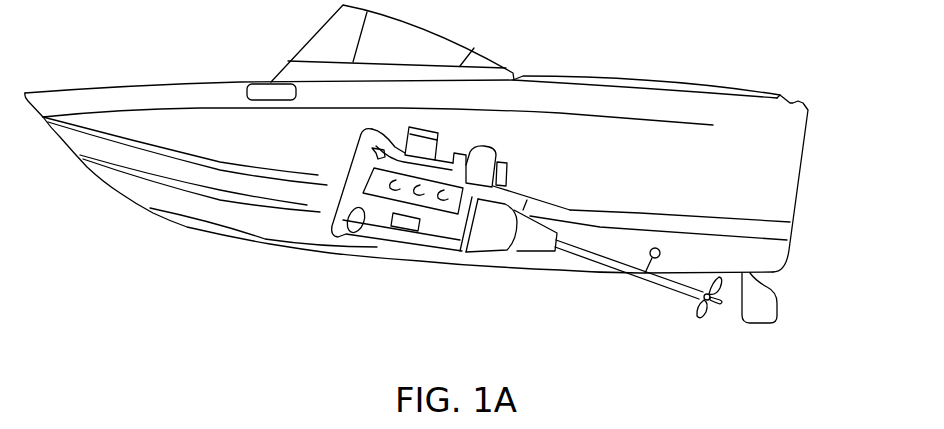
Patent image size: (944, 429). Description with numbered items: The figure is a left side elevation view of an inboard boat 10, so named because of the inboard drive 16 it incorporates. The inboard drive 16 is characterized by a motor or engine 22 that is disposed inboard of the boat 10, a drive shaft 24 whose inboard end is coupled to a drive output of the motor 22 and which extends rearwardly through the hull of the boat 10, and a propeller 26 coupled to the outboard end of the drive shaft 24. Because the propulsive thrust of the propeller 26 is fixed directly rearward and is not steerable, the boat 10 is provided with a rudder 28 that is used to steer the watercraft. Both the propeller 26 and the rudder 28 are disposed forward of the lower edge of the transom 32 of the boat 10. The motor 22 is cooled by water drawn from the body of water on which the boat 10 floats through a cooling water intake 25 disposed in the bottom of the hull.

The inboard boat 10 is at (148, 82).
The inboard drive 16 is at (500, 148).
The motor or engine 22 is at (410, 208).
The drive shaft 24 is at (604, 267).
The cooling water intake 25 is at (645, 273).
The propeller 26 is at (701, 313).
The rudder 28 is at (763, 323).
The transom 32 is at (800, 170).